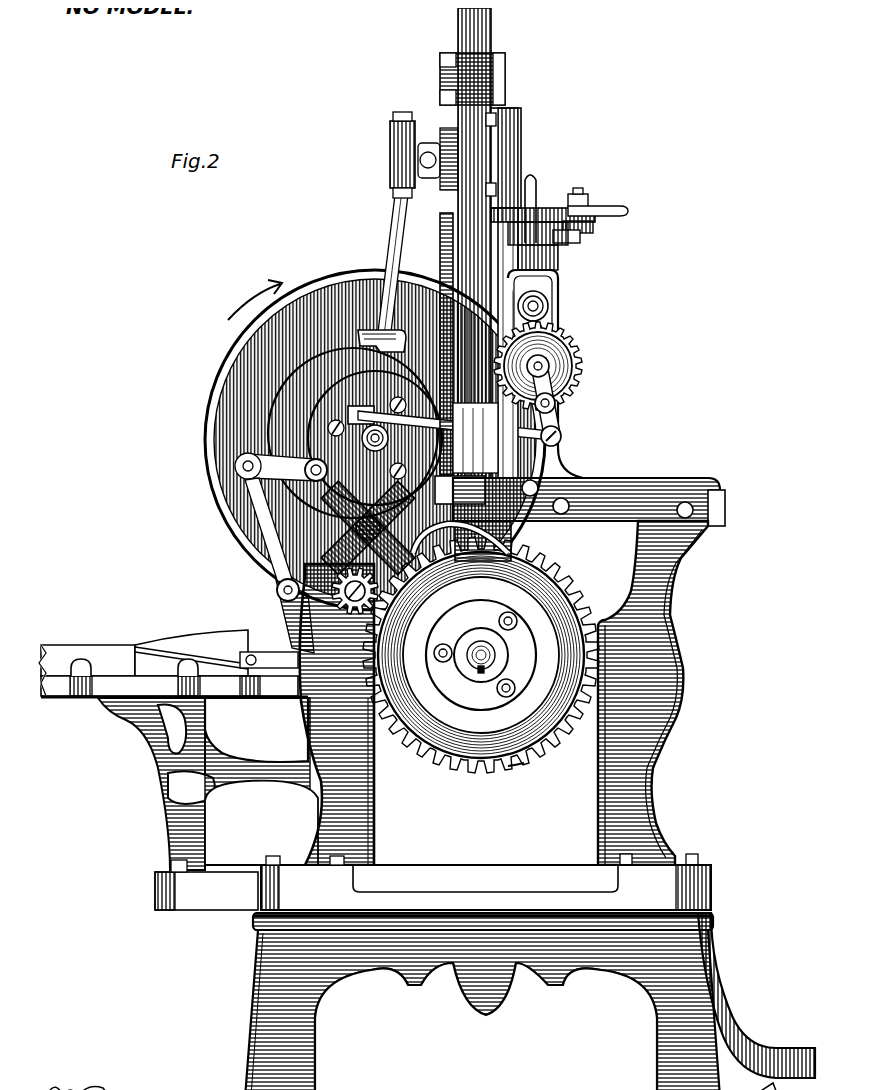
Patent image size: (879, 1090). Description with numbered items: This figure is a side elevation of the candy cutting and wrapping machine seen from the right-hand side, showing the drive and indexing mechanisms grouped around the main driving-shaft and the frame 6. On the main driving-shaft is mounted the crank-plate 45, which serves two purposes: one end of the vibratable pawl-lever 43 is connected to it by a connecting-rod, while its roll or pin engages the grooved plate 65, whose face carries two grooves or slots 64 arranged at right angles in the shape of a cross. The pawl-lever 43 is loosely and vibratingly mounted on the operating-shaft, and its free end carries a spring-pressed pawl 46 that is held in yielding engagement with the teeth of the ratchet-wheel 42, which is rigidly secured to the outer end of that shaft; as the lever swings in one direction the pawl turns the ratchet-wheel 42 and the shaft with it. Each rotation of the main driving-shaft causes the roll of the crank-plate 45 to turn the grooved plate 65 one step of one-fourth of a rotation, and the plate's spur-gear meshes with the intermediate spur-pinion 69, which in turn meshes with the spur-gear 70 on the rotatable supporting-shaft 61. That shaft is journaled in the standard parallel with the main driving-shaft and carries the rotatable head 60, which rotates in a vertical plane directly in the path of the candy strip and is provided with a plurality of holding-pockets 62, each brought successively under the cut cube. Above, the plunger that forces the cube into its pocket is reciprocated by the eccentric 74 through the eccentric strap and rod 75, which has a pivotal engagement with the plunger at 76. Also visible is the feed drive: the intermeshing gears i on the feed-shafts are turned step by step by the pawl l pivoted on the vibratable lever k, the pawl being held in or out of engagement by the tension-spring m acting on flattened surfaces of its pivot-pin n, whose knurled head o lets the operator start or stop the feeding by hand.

The eccentric 74 is at (292, 373).
The crank-plate 45 is at (300, 413).
The eccentric strap and rod 75 is at (382, 231).
The pivotal engagement 76 is at (407, 151).
The tension-spring m is at (542, 202).
The knurled head o is at (570, 192).
The pivot-pin n is at (583, 200).
The vibratable lever k is at (583, 216).
The pawl l is at (573, 223).
The intermeshing gears i is at (560, 244).
The spring-pressed pawl 46 is at (543, 319).
The ratchet-wheel 42 is at (567, 358).
The vibratable pawl-lever 43 is at (543, 409).
The grooved plate 65 is at (327, 521).
The grooves or slots 64 is at (273, 577).
The intermediate spur-pinion 69 is at (337, 608).
The rotatable supporting-shaft 61 is at (482, 653).
The rotatable head 60 is at (481, 679).
The holding-pockets 62 is at (477, 758).
The spur-gear 70 is at (512, 758).
The frame 6 is at (428, 755).